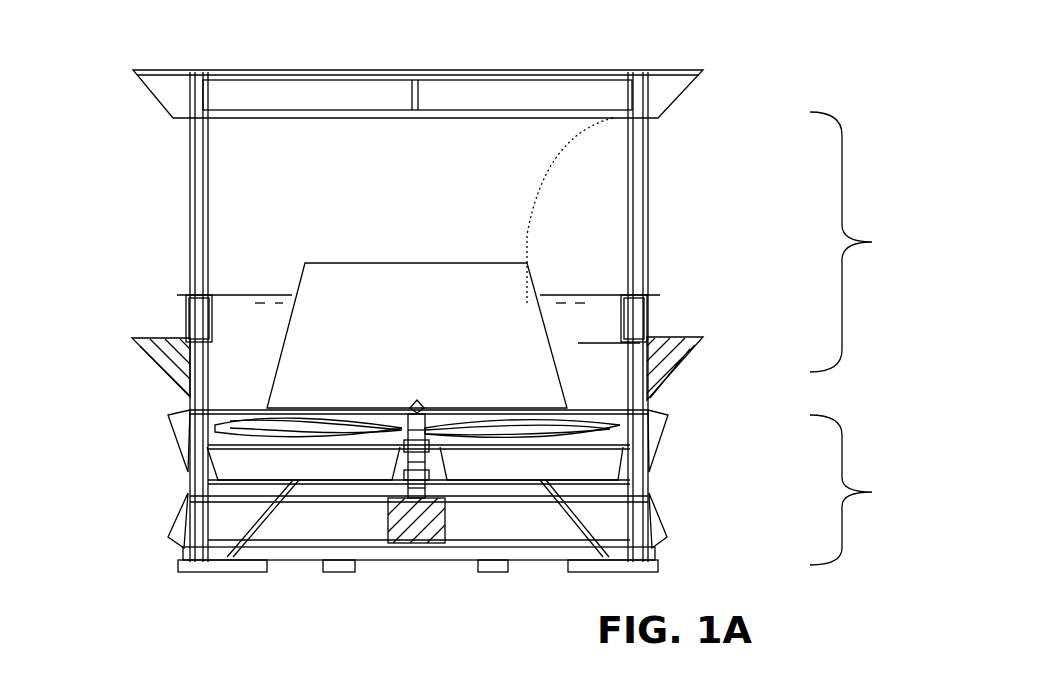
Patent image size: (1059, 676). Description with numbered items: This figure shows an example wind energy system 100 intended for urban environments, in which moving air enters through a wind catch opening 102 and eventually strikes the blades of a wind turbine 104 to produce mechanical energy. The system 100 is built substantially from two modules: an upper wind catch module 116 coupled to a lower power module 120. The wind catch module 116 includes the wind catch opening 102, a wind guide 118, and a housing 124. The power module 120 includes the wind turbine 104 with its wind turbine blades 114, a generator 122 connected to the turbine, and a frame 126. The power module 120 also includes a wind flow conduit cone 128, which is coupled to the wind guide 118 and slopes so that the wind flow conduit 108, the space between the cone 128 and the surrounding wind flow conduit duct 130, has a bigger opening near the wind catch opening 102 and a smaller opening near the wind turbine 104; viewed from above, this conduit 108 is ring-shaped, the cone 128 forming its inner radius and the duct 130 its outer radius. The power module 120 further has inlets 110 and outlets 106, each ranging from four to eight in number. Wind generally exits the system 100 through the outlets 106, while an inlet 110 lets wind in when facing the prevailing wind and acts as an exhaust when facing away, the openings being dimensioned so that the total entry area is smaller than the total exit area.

The wind energy system 100 is at (660, 34).
The wind catch opening 102 is at (570, 205).
The wind turbine 104 is at (565, 407).
The outlets 106 is at (172, 528).
The wind flow conduit 108 is at (250, 352).
The inlets 110 is at (182, 440).
The wind turbine blades 114 is at (178, 432).
The wind catch module 116 is at (865, 242).
The wind guide 118 is at (530, 190).
The power module 120 is at (865, 490).
The generator 122 is at (420, 530).
The housing 124 is at (197, 207).
The frame 126 is at (190, 572).
The wind flow conduit cone 128 is at (283, 330).
The wind flow conduit duct 130 is at (184, 298).